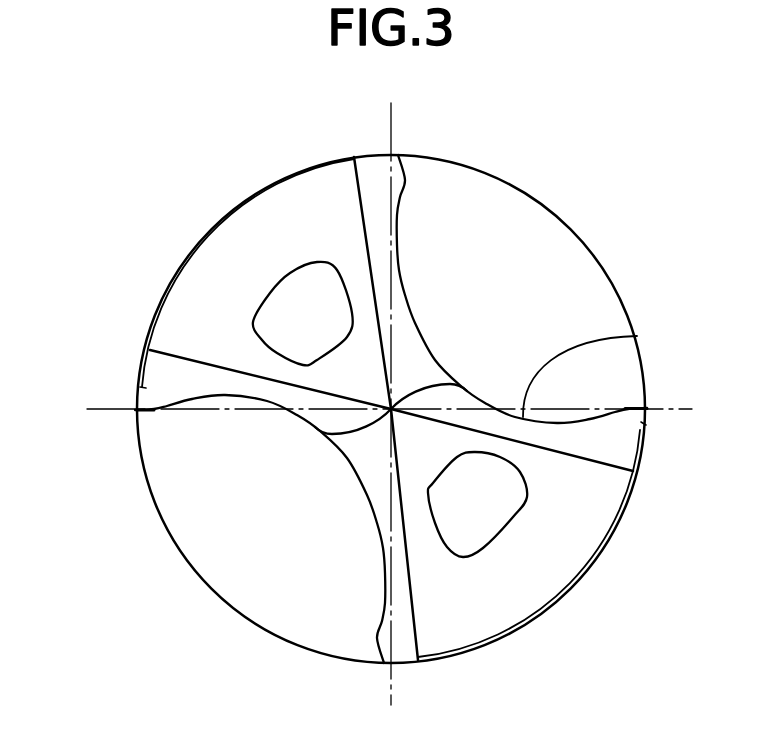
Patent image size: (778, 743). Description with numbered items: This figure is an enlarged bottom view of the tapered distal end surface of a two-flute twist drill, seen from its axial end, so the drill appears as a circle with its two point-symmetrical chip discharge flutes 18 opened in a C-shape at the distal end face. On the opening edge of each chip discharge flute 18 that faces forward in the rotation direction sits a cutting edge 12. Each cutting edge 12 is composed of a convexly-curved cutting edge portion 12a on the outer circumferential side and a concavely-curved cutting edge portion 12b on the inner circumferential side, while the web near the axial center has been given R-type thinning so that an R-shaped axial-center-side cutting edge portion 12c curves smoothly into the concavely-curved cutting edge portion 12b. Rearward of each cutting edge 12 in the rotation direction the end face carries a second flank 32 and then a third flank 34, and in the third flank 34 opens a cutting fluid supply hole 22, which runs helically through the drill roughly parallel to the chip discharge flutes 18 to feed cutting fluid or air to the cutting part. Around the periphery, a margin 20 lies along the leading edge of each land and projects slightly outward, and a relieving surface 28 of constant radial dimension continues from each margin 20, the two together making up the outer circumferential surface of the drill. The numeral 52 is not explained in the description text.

The cutting edge 12 is at (218, 417).
The convexly-curved cutting edge portion 12a is at (620, 410).
The concavely-curved cutting edge portion 12b is at (637, 336).
The axial-center-side cutting edge portion 12c is at (413, 393).
The chip discharge flute 18 is at (145, 542).
The margin 20 is at (135, 389).
The cutting fluid supply hole 22 is at (260, 343).
The relieving surface 28 is at (221, 222).
The second flank 32 is at (228, 381).
The third flank 34 is at (271, 224).
The chamfer 52 is at (395, 198).